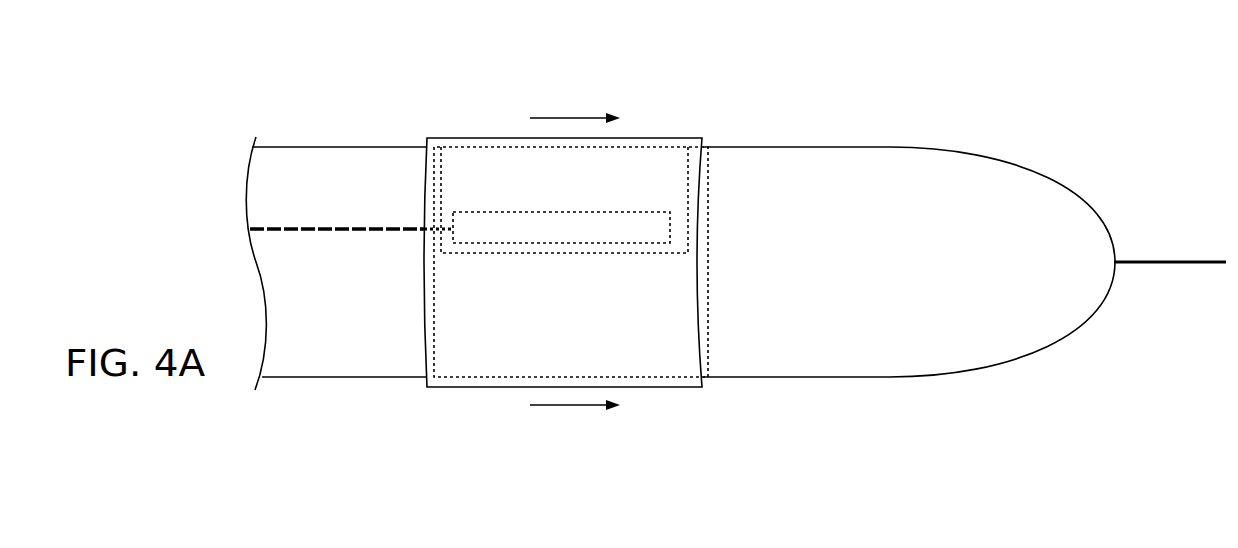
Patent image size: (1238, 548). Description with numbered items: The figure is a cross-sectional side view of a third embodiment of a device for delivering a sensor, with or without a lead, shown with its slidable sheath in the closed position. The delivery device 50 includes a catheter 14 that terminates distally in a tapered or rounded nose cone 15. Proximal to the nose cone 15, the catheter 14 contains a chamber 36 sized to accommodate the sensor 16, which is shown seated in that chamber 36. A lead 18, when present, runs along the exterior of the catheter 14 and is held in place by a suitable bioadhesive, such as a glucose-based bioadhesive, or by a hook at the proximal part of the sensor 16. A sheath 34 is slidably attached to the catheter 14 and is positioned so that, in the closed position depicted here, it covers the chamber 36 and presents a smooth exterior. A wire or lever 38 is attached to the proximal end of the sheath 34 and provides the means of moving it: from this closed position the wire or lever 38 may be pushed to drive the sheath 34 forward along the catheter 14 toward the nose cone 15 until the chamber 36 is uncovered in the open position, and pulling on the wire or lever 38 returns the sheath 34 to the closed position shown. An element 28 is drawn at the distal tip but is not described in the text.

The delivery device 50 is at (630, 58).
The wire or lever 38 is at (345, 377).
The lead 18 is at (310, 228).
The sheath 34 is at (490, 388).
The sensor 16 is at (543, 212).
The chamber 36 is at (612, 191).
The catheter 14 is at (718, 340).
The nose cone 15 is at (1062, 220).
The tip wire 28 is at (1160, 265).